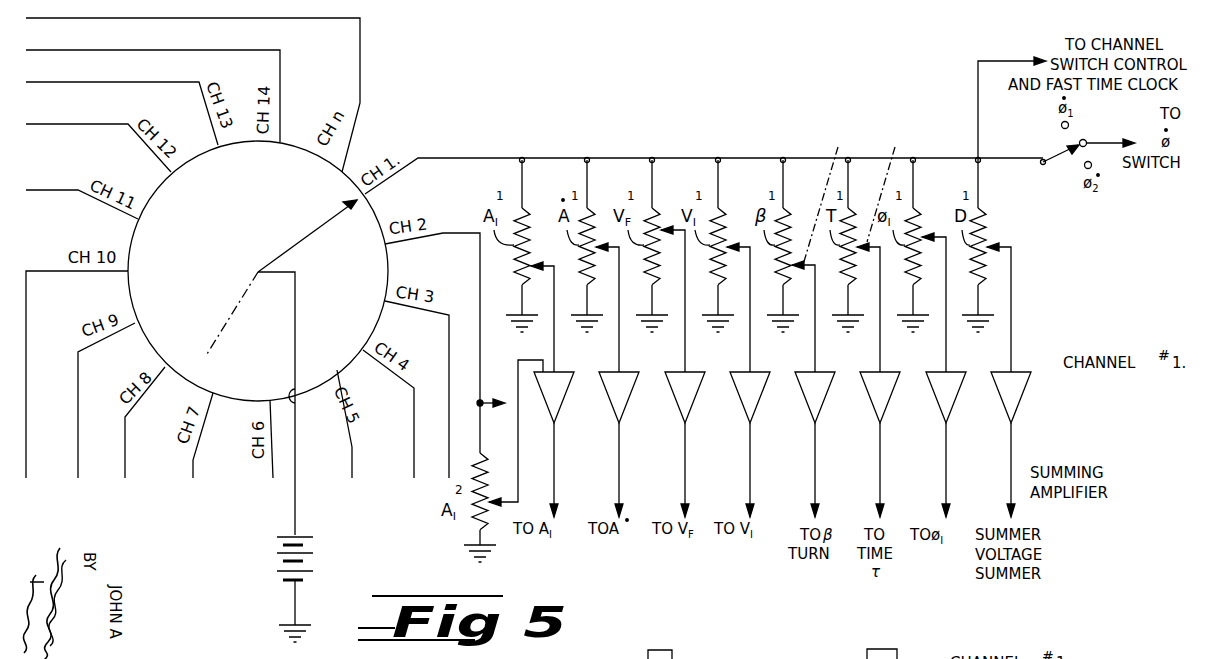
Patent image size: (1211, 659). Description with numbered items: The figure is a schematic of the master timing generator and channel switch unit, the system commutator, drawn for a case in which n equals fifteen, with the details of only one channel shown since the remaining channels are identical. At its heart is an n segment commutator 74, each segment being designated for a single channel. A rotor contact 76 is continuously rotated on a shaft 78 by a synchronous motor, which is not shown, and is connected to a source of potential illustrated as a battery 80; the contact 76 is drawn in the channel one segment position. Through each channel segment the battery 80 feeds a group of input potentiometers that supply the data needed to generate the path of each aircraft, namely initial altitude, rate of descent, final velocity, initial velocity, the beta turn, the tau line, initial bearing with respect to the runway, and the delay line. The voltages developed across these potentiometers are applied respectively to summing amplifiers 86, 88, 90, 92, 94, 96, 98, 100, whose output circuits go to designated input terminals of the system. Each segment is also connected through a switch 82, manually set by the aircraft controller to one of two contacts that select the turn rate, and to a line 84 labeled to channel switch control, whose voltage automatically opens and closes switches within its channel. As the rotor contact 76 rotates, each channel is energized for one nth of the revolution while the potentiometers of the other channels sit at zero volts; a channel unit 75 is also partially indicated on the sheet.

The n segment commutator 74 is at (271, 212).
The channel unit 75 is at (656, 655).
The rotor contact 76 is at (304, 238).
The shaft 78 is at (235, 306).
The battery 80 is at (303, 537).
The switch 82 is at (1067, 149).
The line to channel switch control 84 is at (978, 110).
The summing amplifier 86 is at (545, 400).
The summing amplifier 88 is at (610, 400).
The summing amplifier 90 is at (676, 400).
The summing amplifier 92 is at (741, 400).
The summing amplifier 94 is at (806, 400).
The summing amplifier 96 is at (871, 400).
The summing amplifier 98 is at (937, 400).
The summing amplifier 100 is at (1002, 400).